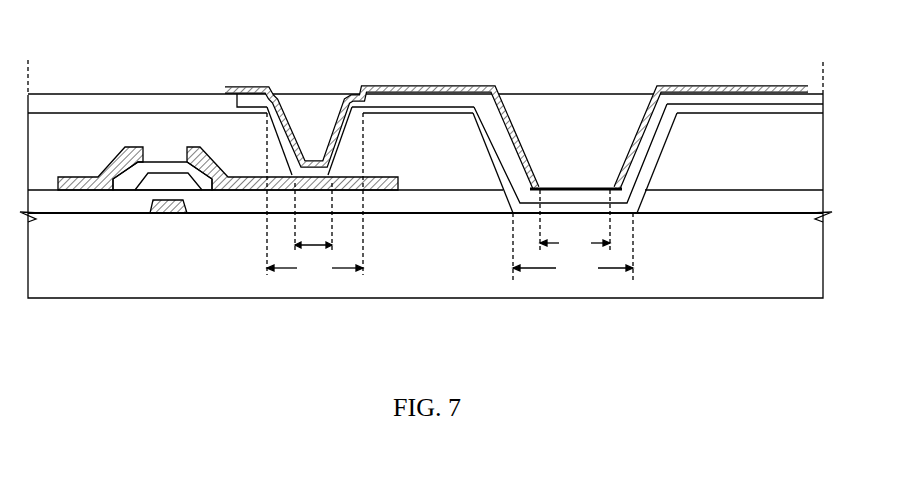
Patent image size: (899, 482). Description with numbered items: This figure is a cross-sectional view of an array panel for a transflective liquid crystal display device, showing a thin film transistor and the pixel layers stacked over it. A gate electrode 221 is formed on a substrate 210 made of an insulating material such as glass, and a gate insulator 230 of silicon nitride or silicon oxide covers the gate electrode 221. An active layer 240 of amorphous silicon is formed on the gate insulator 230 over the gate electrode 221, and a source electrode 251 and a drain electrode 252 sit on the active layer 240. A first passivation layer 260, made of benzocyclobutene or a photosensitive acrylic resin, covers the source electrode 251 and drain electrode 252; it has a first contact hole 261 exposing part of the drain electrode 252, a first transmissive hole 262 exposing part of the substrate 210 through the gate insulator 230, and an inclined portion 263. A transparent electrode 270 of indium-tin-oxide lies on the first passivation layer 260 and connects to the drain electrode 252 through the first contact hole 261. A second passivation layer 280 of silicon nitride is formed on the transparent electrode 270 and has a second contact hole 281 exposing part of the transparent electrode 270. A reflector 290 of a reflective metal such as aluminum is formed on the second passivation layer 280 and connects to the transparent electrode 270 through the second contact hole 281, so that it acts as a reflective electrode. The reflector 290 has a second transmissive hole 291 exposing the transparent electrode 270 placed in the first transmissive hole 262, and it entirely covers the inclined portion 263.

The substrate 210 is at (423, 263).
The gate electrode 221 is at (165, 213).
The gate insulator 230 is at (230, 202).
The active layer 240 is at (165, 162).
The source electrode 251 is at (128, 146).
The drain electrode 252 is at (208, 148).
The first passivation layer 260 is at (50, 123).
The first contact hole 261 is at (313, 216).
The first transmissive hole 262 is at (573, 247).
The inclined portion 263 is at (488, 147).
The transparent electrode 270 is at (463, 107).
The second passivation layer 280 is at (82, 102).
The second contact hole 281 is at (315, 195).
The reflector 290 is at (433, 85).
The second transmissive hole 291 is at (575, 221).